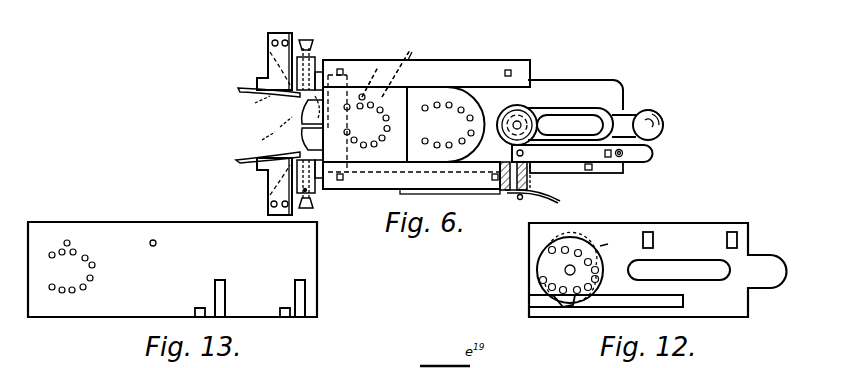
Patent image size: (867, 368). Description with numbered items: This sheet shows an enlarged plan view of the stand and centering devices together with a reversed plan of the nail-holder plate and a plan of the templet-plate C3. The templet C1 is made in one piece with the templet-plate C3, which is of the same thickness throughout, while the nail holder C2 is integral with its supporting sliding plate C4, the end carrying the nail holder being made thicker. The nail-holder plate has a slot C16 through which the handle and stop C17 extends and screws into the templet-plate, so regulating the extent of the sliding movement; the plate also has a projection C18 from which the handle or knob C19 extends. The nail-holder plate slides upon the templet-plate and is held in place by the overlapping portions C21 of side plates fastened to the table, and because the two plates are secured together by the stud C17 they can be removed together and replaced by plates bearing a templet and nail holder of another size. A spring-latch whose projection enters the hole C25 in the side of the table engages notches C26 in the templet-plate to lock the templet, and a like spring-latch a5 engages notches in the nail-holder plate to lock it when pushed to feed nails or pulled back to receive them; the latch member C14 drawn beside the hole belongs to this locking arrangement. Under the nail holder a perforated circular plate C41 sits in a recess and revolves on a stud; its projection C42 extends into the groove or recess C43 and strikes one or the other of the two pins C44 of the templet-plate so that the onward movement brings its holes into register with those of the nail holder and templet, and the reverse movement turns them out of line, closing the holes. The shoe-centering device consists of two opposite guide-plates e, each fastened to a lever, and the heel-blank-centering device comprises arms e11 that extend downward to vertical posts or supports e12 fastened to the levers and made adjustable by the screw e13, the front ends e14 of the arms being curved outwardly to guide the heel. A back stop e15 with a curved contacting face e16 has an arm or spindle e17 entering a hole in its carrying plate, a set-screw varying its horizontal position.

In FIG. 6, the templet C1 is at (424, 39).
In FIG. 12, the nail holder C2 is at (658, 259).
In FIG. 6, the perforated plate C3 is at (411, 111).
In FIG. 13, the perforated plate C3 is at (172, 269).
In FIG. 6, the supporting sliding plate C4 is at (570, 113).
In FIG. 12, the supporting sliding plate C4 is at (610, 237).
In FIG. 6, the bar C14 is at (534, 191).
In FIG. 6, the slot C16 is at (570, 125).
In FIG. 12, the slot C16 is at (679, 270).
In FIG. 6, the handle and stop C17 is at (528, 102).
In FIG. 6, the projection C18 is at (636, 105).
In FIG. 6, the handle or knob C19 is at (663, 121).
In FIG. 6, the overlapping portions C21 is at (426, 127).
In FIG. 6, the hole C25 is at (505, 190).
In FIG. 6, the notches C26 is at (533, 186).
In FIG. 13, the notches C26 is at (200, 318).
In FIG. 12, the circular plate C41 is at (572, 240).
In FIG. 12, the projection C42 is at (560, 308).
In FIG. 12, the groove or recess C43 is at (683, 306).
In FIG. 6, the pins C44 is at (396, 59).
In FIG. 13, the pins C44 is at (155, 239).
In FIG. 6, the spring-latch a5 is at (582, 159).
In FIG. 6, the guide-plates e is at (274, 124).
In FIG. 6, the arms e11 is at (260, 121).
In FIG. 6, the vertical posts or supports e12 is at (279, 120).
In FIG. 6, the screw e13 is at (313, 42).
In FIG. 6, the front ends e14 is at (238, 88).
In FIG. 6, the back stop e15 is at (305, 136).
In FIG. 6, the contacting face e16 is at (305, 108).
In FIG. 6, the arm or spindle e17 is at (361, 65).